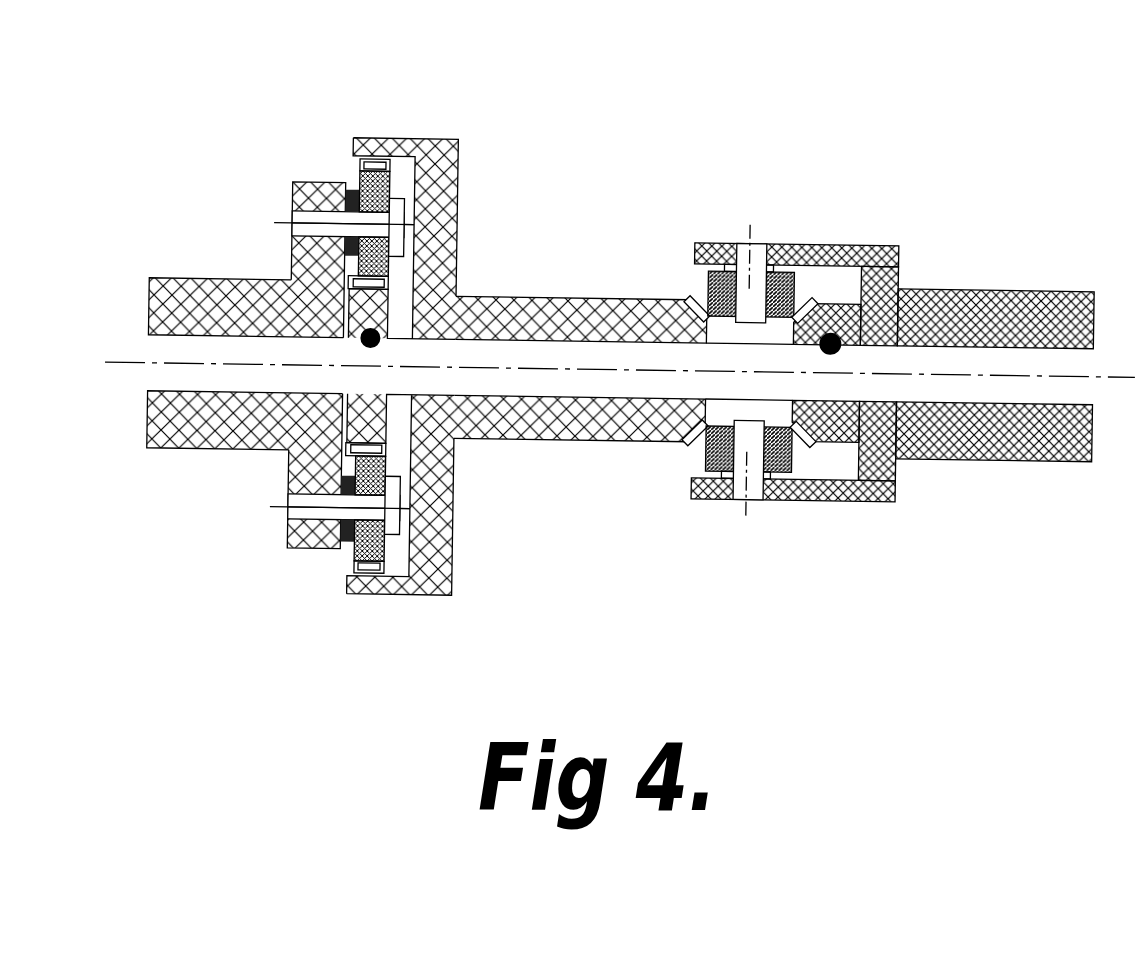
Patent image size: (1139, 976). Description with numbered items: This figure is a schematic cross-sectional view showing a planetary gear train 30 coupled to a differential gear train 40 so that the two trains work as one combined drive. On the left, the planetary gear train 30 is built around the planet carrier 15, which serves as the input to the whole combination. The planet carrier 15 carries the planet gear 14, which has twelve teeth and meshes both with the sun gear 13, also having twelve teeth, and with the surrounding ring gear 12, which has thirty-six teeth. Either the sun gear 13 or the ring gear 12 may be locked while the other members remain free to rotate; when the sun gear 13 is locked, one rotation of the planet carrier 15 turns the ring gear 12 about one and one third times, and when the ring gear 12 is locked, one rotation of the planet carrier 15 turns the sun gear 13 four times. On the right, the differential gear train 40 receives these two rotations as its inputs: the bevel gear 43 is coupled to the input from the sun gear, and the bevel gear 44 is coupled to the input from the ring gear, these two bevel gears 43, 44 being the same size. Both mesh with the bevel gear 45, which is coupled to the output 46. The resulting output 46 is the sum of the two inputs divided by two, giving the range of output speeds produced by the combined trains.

The ring gear 12 is at (382, 138).
The sun gear 13 is at (340, 420).
The planet gear 14 is at (357, 187).
The planet carrier 15 is at (225, 280).
The planetary gear train 30 is at (338, 602).
The differential gear train 40 is at (786, 534).
The bevel gear 43 is at (832, 333).
The bevel gear 44 is at (673, 318).
The bevel gear 45 is at (722, 270).
The output 46 is at (960, 330).